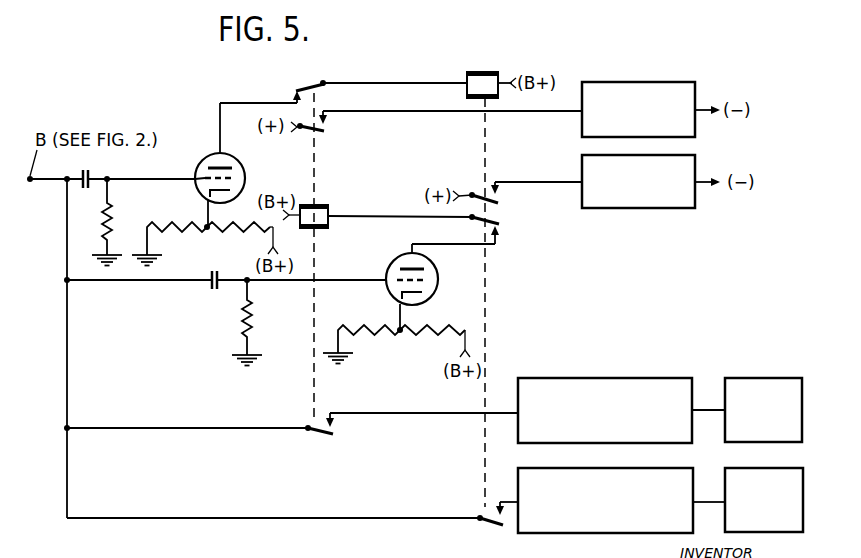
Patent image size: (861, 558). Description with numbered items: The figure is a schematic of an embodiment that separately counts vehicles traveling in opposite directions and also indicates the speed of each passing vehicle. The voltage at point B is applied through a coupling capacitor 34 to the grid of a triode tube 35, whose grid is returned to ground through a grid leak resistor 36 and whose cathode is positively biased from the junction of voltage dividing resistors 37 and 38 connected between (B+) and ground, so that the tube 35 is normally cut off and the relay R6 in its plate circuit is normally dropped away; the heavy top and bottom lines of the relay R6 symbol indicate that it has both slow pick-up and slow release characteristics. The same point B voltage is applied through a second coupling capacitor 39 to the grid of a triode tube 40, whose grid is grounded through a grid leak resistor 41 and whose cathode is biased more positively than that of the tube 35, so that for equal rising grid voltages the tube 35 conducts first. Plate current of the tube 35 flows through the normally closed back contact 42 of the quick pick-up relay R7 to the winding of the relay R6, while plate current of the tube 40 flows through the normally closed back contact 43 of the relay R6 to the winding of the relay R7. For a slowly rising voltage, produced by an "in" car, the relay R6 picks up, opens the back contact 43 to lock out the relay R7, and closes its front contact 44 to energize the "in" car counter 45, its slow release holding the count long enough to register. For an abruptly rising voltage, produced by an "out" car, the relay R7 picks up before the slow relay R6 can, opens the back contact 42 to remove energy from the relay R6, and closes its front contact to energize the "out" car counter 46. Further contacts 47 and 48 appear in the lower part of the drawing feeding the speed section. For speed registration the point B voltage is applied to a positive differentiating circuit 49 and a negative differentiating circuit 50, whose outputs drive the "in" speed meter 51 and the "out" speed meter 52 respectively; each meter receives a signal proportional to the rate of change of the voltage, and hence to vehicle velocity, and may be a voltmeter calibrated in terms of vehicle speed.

The coupling capacitor 34 is at (91, 176).
The triode tube 35 is at (252, 164).
The grid leak resistor 36 is at (113, 213).
The voltage dividing resistor 37 is at (238, 240).
The voltage dividing resistor 38 is at (169, 232).
The coupling capacitor 39 is at (210, 286).
The triode tube 40 is at (434, 287).
The grid leak resistor 41 is at (252, 311).
The back contact 42 is at (324, 89).
The back contact 43 is at (475, 223).
The front contact 44 is at (479, 190).
The "in" car counter 45 is at (643, 209).
The "out" car counter 46 is at (319, 131).
The relay switch 47 is at (318, 435).
The relay switch 48 is at (492, 526).
The positive differentiating circuit 49 is at (590, 377).
The negative differentiating circuit 50 is at (587, 468).
The "in" speed meter 51 is at (750, 377).
The "out" speed meter 52 is at (757, 468).
The relay R6 is at (483, 72).
The relay R7 is at (314, 201).